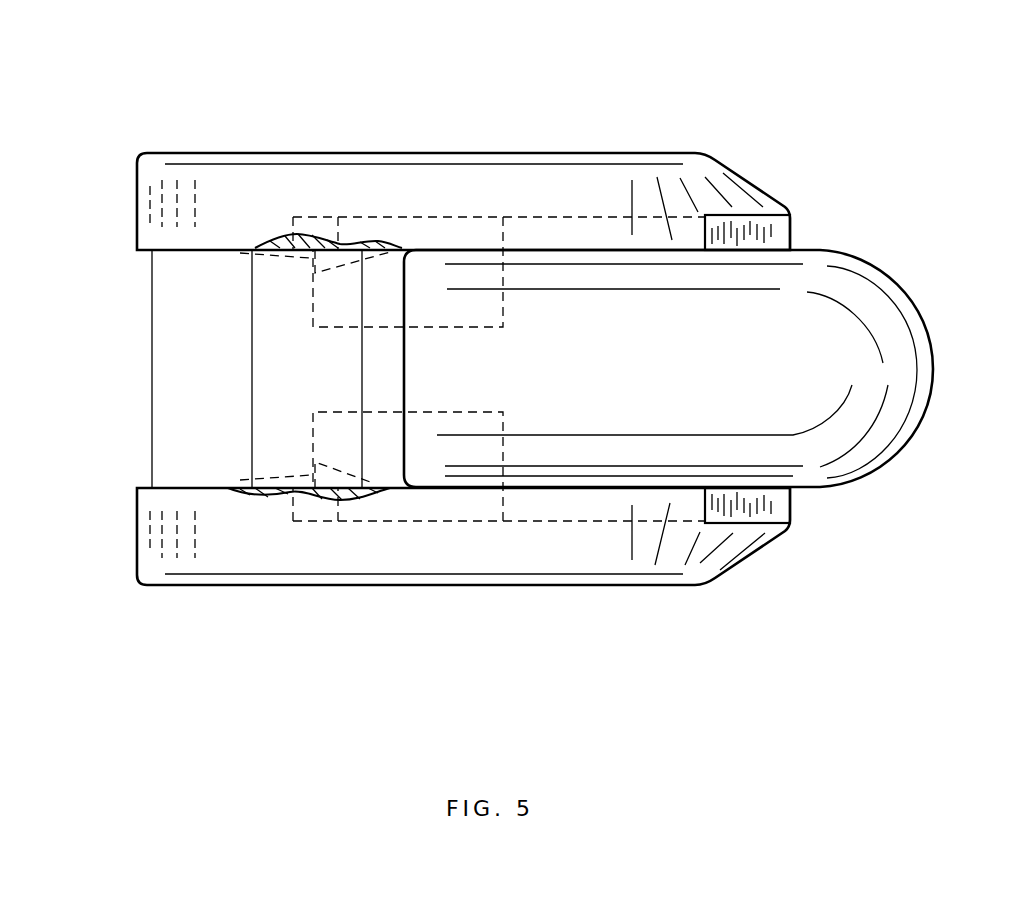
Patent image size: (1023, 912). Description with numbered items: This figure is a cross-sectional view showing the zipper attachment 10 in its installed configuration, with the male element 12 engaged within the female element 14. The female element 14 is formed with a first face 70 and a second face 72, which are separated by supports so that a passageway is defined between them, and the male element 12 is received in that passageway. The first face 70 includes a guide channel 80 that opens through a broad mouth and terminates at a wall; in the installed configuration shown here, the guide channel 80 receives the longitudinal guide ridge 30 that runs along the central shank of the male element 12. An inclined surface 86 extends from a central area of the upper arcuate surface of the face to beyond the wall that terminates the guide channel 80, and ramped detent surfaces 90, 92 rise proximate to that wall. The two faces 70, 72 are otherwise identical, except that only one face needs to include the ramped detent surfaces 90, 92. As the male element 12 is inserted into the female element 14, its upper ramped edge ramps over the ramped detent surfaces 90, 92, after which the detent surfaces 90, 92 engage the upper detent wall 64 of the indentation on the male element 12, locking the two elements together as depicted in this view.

The zipper attachment 10 is at (773, 96).
The male element 12 is at (873, 338).
The female element 14 is at (755, 184).
The longitudinal guide ridge 30 is at (622, 233).
The upper detent wall 64 is at (318, 432).
The first face 70 is at (165, 563).
The second face 72 is at (153, 208).
The guide channel 80 is at (545, 217).
The inclined surface 86 is at (267, 255).
The ramped detent surface 90 is at (312, 457).
The ramped detent surface 92 is at (333, 480).